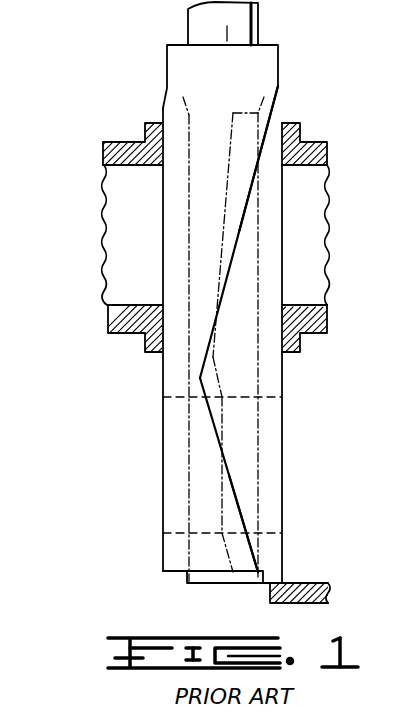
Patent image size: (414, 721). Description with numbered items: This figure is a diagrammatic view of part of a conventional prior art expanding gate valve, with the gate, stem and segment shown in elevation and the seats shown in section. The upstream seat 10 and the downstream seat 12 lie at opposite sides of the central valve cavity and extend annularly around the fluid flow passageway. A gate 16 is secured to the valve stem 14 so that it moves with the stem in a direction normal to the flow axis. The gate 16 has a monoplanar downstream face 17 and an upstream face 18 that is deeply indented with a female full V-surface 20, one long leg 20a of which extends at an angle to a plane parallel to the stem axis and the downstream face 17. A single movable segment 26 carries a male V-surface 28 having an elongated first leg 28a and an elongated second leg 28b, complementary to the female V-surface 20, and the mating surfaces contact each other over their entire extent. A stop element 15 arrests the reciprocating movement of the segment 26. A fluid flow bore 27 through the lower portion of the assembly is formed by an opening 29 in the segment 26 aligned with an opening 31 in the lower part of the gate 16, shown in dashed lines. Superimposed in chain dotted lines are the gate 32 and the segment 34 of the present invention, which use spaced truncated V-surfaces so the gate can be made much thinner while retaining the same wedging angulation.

The upstream seat 10 is at (310, 323).
The downstream seat 12 is at (127, 305).
The valve stem 14 is at (197, 35).
The stop element 15 is at (297, 583).
The gate 16 is at (170, 463).
The downstream face 17 is at (162, 377).
The upstream face 18 is at (278, 62).
The female full V-surface 20 is at (238, 254).
The leg of the full V-surface 20a is at (247, 197).
The movable segment 26 is at (245, 369).
The fluid flow bore 27 is at (170, 522).
The male V-surface 28 is at (201, 419).
The first leg of the male V-surface 28a is at (219, 303).
The second leg of the male V-surface 28b is at (239, 512).
The opening in the segment 29 is at (263, 427).
The opening in the gate 31 is at (183, 397).
The gate of the present invention 32 is at (200, 583).
The segment of the present invention 34 is at (243, 594).